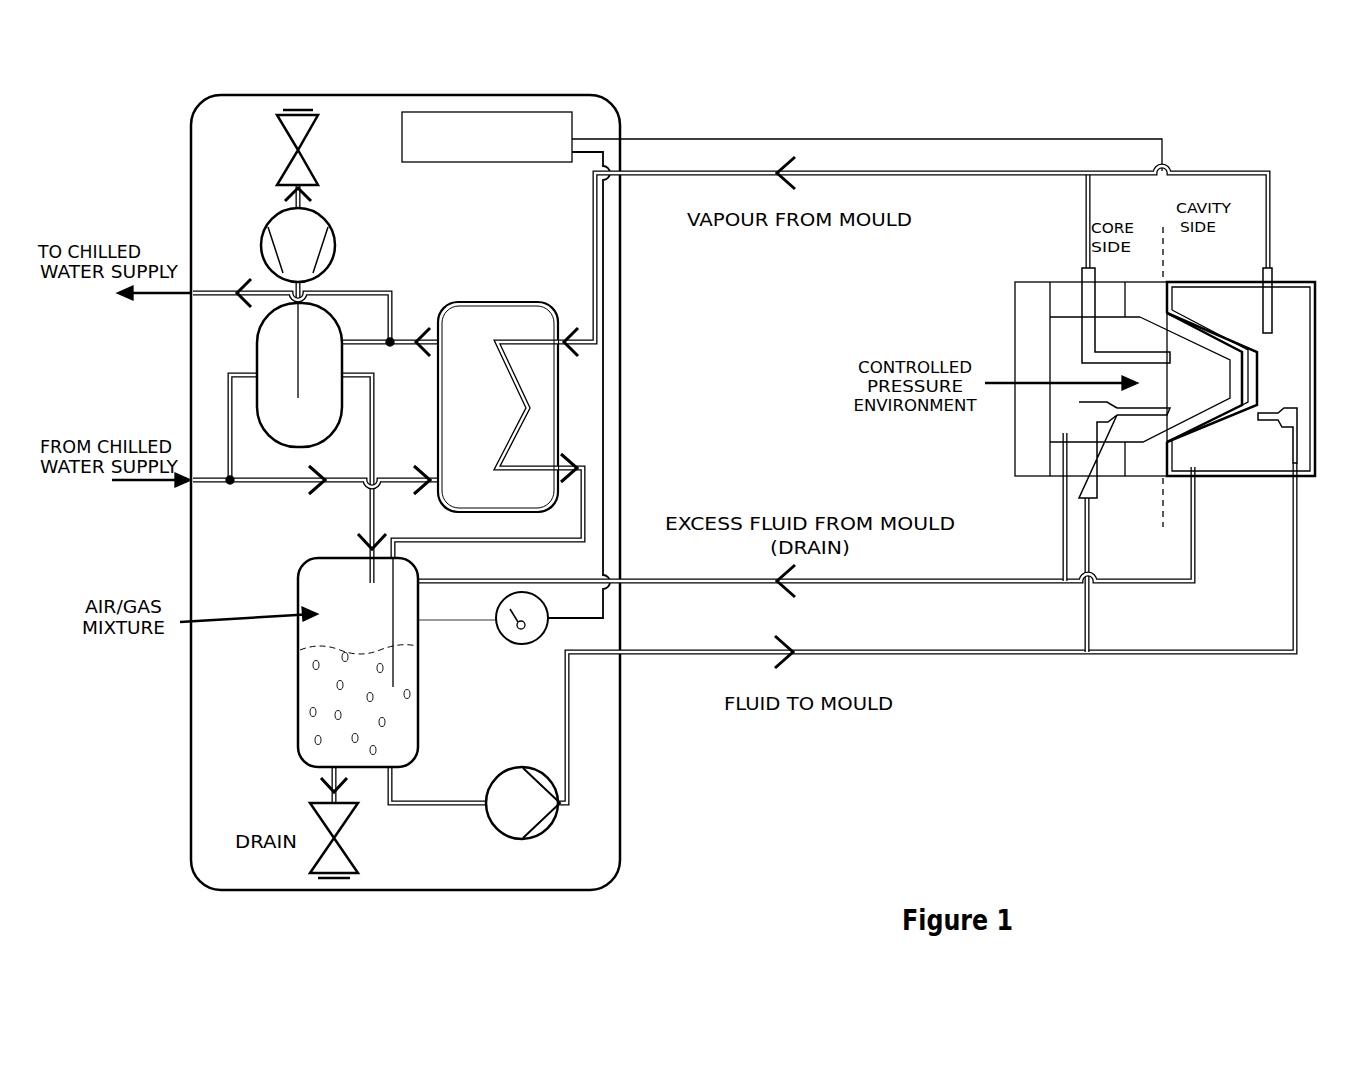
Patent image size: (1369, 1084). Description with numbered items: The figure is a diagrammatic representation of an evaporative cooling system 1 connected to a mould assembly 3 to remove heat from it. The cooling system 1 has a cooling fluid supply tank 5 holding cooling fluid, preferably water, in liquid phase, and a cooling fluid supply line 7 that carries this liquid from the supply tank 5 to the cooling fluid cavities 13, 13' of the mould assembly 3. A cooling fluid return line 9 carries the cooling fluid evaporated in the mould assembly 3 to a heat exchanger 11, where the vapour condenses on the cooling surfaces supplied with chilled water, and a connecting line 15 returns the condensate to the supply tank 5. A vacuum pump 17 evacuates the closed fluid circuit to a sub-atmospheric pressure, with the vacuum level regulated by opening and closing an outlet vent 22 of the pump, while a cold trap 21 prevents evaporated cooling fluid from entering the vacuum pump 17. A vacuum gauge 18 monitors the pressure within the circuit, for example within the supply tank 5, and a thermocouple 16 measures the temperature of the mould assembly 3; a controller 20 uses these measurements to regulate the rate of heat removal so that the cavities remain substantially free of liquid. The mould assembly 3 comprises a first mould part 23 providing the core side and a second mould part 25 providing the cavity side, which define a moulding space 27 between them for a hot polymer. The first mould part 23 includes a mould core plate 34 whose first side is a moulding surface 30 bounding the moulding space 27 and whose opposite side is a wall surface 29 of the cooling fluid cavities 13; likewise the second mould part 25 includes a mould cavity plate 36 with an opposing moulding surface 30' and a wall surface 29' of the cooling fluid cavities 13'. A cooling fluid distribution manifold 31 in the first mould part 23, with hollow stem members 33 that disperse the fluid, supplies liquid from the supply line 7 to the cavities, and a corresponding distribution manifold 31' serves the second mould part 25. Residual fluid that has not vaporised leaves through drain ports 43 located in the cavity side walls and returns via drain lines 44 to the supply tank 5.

The evaporative cooling system 1 is at (159, 826).
The mould assembly 3 is at (1153, 746).
The cooling fluid supply tank 5 is at (312, 695).
The cooling fluid supply line 7 is at (567, 762).
The cooling fluid return line 9 is at (597, 225).
The heat exchanger 11 is at (526, 318).
The cooling fluid cavities 13 is at (1178, 320).
The cooling fluid cavities 13' is at (1295, 281).
The connecting line 15 is at (557, 542).
The thermocouple 16 is at (1227, 172).
The vacuum pump 17 is at (288, 228).
The vacuum gauge 18 is at (537, 625).
The controller 20 is at (482, 133).
The cold trap 21 is at (272, 350).
The outlet vent 22 is at (288, 140).
The first mould part 23 is at (1028, 282).
The second mould part 25 is at (1316, 432).
The moulding space 27 is at (1245, 388).
The wall surface 29 is at (1140, 379).
The wall surface 29' is at (1266, 377).
The moulding surface 30 is at (1261, 377).
The moulding surface 30' is at (1262, 375).
The cooling fluid distribution manifold 31 is at (1106, 551).
The distribution manifold 31' is at (1312, 446).
The hollow stem members 33 is at (1150, 413).
The mould core plate 34 is at (1145, 290).
The mould cavity plate 36 is at (1202, 433).
The drain port 43 is at (1064, 443).
The drain lines 44 is at (982, 585).